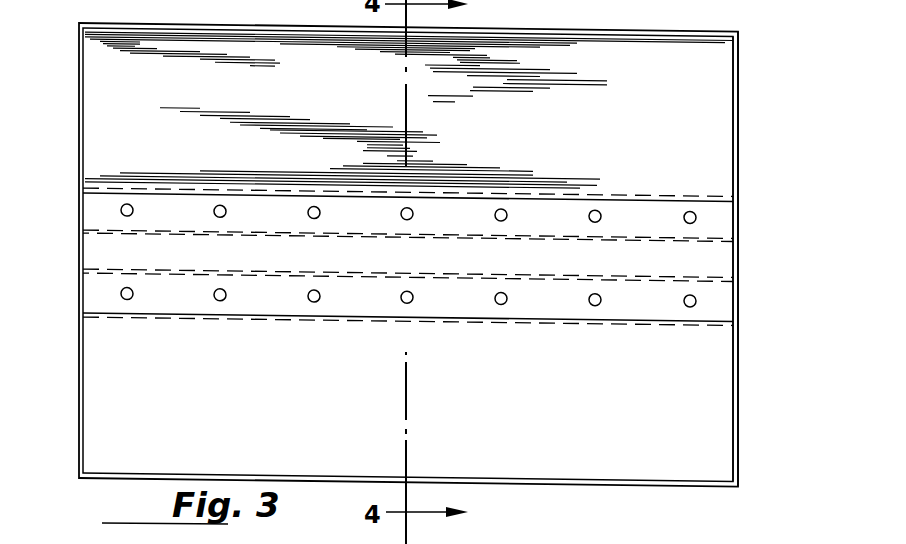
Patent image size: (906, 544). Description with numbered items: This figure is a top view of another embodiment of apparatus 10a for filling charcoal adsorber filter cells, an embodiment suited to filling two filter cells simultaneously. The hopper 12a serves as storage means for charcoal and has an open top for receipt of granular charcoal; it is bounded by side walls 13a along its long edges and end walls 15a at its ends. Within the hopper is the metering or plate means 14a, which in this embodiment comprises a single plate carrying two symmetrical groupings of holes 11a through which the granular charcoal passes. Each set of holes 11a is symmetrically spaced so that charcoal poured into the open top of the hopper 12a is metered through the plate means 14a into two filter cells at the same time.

The panel assembly 10a is at (742, 49).
The holes 11a is at (697, 217).
The hopper 12a is at (696, 132).
The side walls 13a is at (103, 135).
The metering means 14a is at (100, 295).
The end walls 15a is at (735, 401).